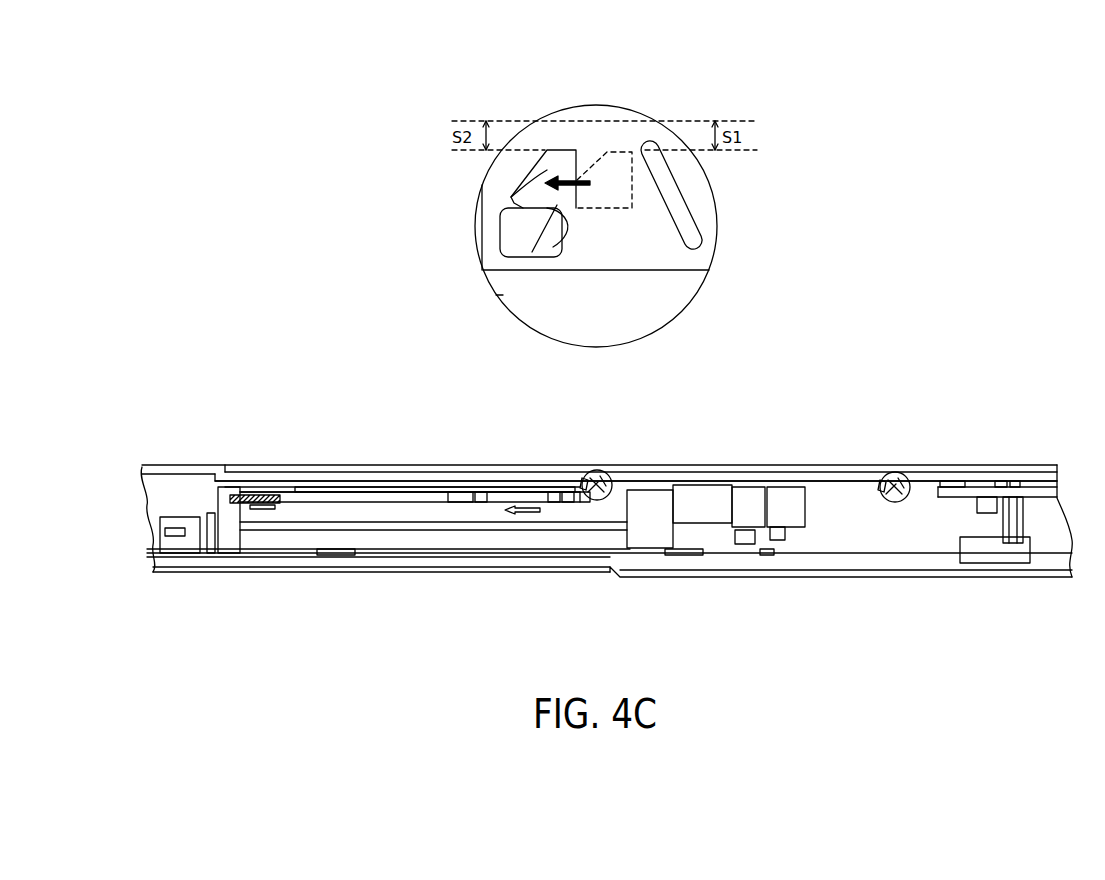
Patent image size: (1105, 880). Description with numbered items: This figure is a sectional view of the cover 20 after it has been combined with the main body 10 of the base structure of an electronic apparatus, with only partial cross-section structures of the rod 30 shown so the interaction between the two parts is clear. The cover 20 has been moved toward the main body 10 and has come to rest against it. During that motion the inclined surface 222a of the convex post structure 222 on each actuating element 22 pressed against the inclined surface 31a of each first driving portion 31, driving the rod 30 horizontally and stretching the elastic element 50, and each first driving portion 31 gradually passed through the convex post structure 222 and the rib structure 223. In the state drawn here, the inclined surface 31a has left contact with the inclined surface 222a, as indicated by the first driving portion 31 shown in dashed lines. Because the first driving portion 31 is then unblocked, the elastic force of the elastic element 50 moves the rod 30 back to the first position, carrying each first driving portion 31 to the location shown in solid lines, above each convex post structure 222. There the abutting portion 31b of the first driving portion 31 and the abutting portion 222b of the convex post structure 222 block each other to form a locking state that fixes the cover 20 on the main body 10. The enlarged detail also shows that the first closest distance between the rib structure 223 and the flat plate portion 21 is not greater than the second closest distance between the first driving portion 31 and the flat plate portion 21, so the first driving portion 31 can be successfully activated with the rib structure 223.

The main body 10 is at (1033, 468).
The cover 20 is at (692, 470).
The flat plate portion 21 is at (597, 118).
The actuating element 22 is at (590, 470).
The convex post structure 222 is at (507, 222).
The inclined surface 222a is at (503, 245).
The abutting portion 222b is at (562, 238).
The rib structure 223 is at (667, 188).
The rod 30 is at (460, 490).
The first driving portion 31 is at (632, 210).
The inclined surface 31a is at (537, 162).
The abutting portion 31b is at (522, 190).
The elastic element 50 is at (255, 495).